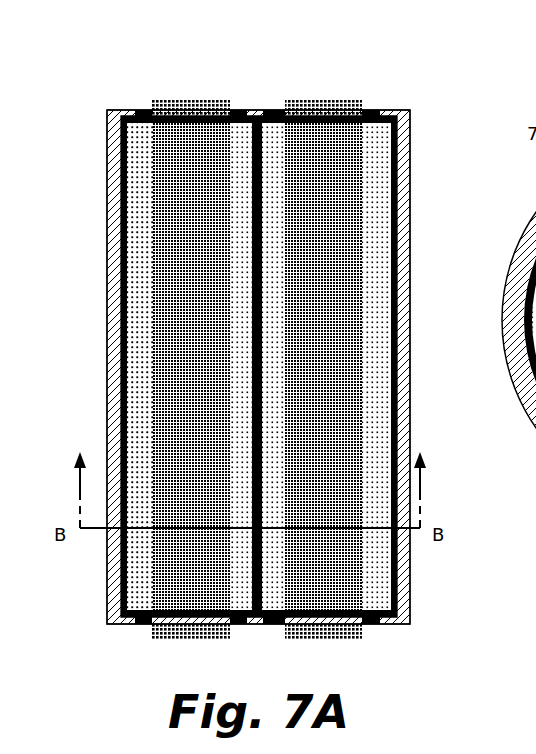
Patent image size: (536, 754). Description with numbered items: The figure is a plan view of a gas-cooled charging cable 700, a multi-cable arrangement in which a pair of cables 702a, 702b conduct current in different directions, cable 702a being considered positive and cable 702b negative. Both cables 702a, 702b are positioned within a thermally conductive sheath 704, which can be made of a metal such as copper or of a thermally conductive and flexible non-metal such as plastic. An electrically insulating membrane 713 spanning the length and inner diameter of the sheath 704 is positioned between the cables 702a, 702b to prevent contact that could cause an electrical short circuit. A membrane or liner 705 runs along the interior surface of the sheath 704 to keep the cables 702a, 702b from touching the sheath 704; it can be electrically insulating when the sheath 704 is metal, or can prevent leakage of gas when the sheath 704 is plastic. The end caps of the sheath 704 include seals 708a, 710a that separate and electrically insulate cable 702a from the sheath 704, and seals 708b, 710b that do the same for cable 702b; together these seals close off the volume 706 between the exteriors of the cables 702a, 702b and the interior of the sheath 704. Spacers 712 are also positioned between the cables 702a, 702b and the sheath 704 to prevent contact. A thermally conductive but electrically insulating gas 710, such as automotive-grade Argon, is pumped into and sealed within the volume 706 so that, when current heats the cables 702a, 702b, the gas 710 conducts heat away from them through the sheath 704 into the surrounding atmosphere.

The gas-cooled charging cable 700 is at (97, 30).
The cable 702a is at (191, 366).
The cable 702b is at (323, 366).
The thermally conductive sheath 704 is at (403, 610).
The liner 705 is at (396, 556).
The volume 706 is at (131, 325).
The seal 708a is at (144, 116).
The seal 708b is at (372, 116).
The gas 710 is at (130, 395).
The seal 710a is at (144, 624).
The seal 710b is at (372, 624).
The spacer 712 is at (137, 248).
The electrically insulating membrane 713 is at (263, 204).